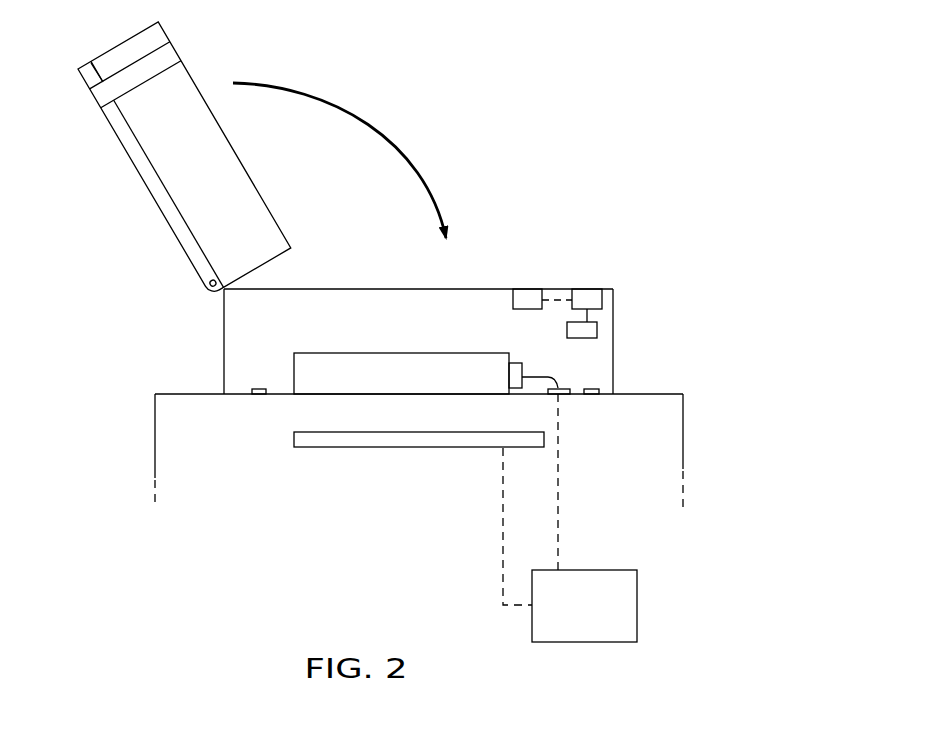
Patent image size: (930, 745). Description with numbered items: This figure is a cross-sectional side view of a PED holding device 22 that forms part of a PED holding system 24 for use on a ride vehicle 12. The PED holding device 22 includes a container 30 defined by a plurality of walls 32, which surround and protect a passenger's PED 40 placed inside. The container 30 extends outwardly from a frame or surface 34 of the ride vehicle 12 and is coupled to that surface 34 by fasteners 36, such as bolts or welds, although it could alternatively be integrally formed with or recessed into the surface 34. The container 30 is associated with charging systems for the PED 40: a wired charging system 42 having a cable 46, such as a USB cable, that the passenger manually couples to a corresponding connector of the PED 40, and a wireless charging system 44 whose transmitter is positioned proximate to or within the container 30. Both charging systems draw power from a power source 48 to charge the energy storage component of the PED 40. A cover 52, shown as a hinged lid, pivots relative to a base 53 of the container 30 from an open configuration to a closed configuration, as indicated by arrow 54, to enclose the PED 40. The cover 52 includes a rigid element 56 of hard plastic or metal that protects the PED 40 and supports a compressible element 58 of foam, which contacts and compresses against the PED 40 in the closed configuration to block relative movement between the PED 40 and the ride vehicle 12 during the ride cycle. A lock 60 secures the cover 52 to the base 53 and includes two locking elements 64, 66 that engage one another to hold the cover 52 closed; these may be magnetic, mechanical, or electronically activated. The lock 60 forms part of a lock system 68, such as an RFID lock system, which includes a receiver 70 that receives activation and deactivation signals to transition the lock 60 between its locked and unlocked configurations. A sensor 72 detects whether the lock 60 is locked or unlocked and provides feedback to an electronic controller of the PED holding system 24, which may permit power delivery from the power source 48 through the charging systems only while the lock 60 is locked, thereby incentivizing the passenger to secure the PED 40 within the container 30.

The ride vehicle 12 is at (694, 423).
The PED holding device 22 is at (613, 164).
The PED holding system 24 is at (593, 132).
The container 30 is at (676, 239).
The walls 32 is at (613, 362).
The surface 34 is at (680, 386).
The fasteners 36 is at (258, 394).
The PED 40 is at (347, 353).
The wired charging system 42 is at (537, 358).
The wireless charging system 44 is at (355, 448).
The cable 46 is at (558, 388).
The power source 48 is at (637, 607).
The cover 52 is at (122, 33).
The base 53 is at (212, 339).
The arrow 54 is at (363, 122).
The rigid element 56 is at (169, 193).
The compressible element 58 is at (141, 84).
The lock 60 is at (608, 284).
The locking element 64 is at (100, 98).
The locking element 66 is at (586, 289).
The lock system 68 is at (624, 313).
The receiver 70 is at (512, 302).
The sensor 72 is at (597, 330).